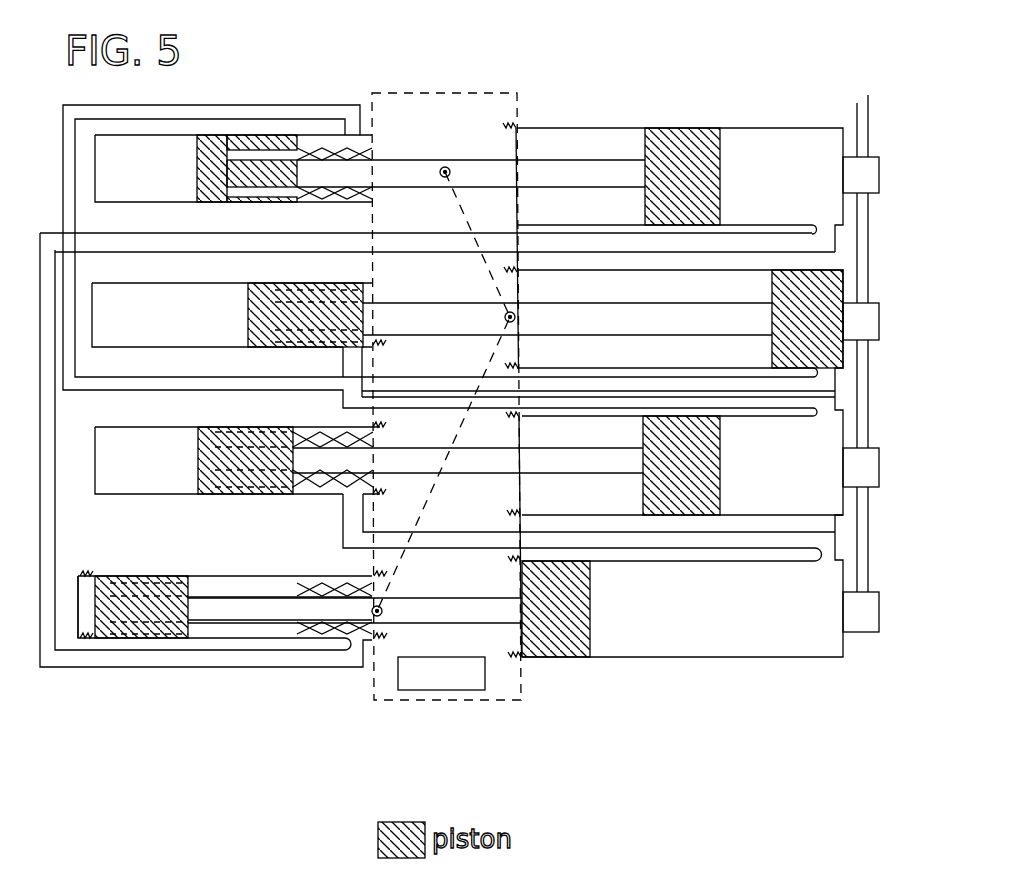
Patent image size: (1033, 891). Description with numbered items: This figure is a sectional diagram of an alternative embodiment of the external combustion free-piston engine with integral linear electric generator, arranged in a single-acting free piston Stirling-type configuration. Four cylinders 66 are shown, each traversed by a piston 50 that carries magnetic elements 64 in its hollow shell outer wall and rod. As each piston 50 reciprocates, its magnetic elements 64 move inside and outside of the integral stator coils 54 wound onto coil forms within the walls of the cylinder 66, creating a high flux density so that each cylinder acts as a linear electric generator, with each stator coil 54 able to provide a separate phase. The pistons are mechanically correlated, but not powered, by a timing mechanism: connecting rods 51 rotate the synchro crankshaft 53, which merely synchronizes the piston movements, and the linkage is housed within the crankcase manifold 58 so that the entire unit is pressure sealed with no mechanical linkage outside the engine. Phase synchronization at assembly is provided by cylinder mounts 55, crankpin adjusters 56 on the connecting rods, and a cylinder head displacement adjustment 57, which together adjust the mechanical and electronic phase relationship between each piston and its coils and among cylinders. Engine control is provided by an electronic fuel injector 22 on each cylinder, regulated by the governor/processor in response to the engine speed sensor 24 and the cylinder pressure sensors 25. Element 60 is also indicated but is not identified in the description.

The electronic fuel injector 22 is at (852, 413).
The engine speed sensor 24 is at (432, 692).
The cylinder pressure sensors 25 is at (862, 634).
The pistons 50 is at (678, 128).
The connecting rods 51 is at (386, 160).
The synchro crankshaft 53 is at (443, 352).
The stator coils 54 is at (330, 637).
The cylinder mounts 55 is at (516, 126).
The crankpin adjusters 56 is at (445, 166).
The cylinder head displacement adjustment 57 is at (80, 640).
The crankcase manifold 58 is at (505, 702).
The auxiliary piston 60 is at (141, 654).
The magnetic elements 64 is at (130, 640).
The cylinders 66 is at (587, 128).